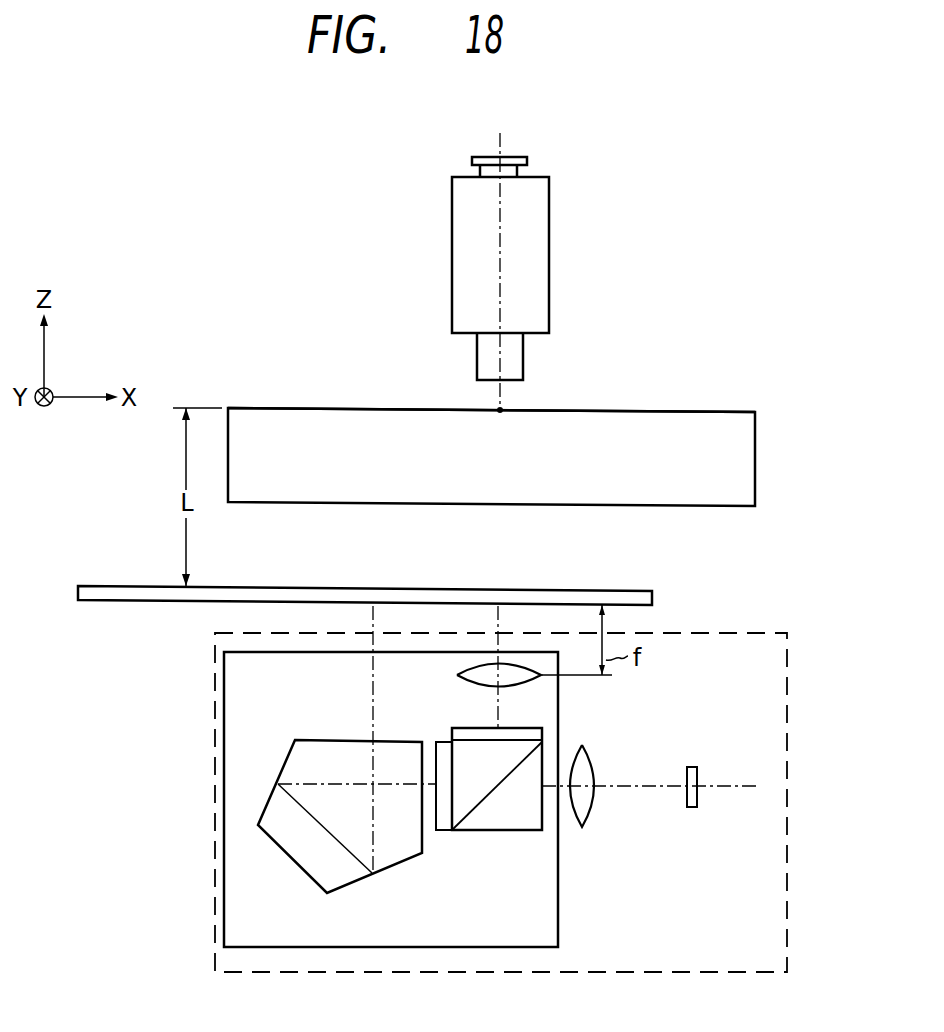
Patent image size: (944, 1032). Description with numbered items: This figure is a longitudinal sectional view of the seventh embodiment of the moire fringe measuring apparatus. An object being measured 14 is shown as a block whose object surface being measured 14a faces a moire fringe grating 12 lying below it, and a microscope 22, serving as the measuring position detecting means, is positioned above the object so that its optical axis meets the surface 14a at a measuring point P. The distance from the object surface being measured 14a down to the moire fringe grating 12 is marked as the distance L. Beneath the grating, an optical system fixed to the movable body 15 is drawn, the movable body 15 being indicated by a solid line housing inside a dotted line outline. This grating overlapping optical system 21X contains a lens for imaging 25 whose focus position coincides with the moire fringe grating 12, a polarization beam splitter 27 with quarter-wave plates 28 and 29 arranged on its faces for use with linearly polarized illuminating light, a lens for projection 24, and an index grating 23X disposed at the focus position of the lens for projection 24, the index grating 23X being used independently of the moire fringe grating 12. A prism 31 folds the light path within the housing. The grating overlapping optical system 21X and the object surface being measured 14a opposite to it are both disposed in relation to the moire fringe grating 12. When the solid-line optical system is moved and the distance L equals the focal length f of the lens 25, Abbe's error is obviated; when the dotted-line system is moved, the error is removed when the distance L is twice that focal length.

The microscope 22 is at (549, 212).
The beam spot point on surface P is at (503, 408).
The object being measured 14 is at (620, 506).
The surface of the object being measured 14a is at (356, 408).
The moire fringe grating 12 is at (399, 590).
The movable body 15 is at (787, 662).
The lens for imaging 25 is at (456, 668).
The polarization beam splitter 27 is at (488, 818).
The quarter-wave plate 29 is at (468, 726).
The quarter-wave plate 28 is at (436, 753).
The pentaprism 31 is at (298, 858).
The lens for projection 24 is at (585, 746).
The index grating 23X is at (700, 764).
The grating overlapping optical system 21X is at (666, 706).